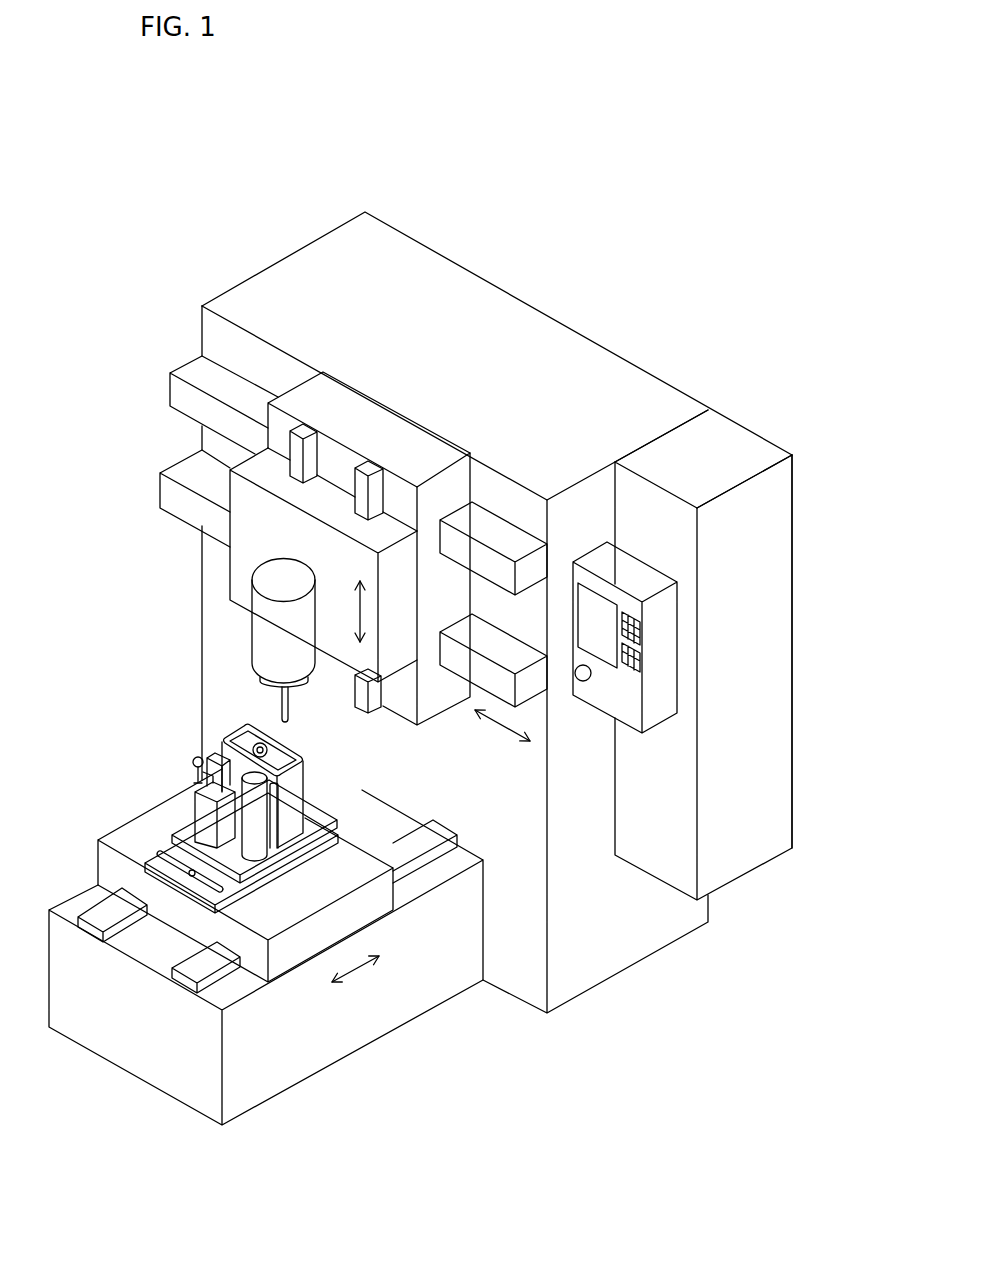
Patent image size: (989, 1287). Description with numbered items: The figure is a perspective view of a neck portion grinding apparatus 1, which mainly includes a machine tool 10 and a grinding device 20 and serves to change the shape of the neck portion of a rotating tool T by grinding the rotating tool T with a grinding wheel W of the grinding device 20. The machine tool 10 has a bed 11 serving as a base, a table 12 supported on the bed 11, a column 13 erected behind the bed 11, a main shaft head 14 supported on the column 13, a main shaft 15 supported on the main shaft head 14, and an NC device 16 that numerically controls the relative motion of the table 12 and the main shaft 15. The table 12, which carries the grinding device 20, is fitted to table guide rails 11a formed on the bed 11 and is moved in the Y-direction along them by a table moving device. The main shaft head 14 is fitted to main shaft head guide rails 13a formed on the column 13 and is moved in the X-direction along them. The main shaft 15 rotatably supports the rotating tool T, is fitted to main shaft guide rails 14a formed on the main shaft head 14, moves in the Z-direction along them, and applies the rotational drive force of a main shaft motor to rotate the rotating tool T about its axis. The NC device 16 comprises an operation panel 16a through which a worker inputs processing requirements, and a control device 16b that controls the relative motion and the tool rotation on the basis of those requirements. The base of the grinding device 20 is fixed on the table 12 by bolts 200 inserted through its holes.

The neck portion grinding apparatus 1 is at (562, 228).
The machine tool 10 is at (660, 340).
The bed 11 is at (338, 1080).
The table guide rails 11a is at (173, 983).
The table 12 is at (100, 860).
The column 13 is at (690, 907).
The main shaft head guide rails 13a is at (172, 494).
The main shaft head 14 is at (392, 425).
The main shaft guide rails 14a is at (372, 467).
The main shaft 15 is at (262, 634).
The NC device 16 is at (772, 436).
The operation panel 16a is at (662, 703).
The control device 16b is at (776, 543).
The grinding device 20 is at (140, 800).
The bolts 200 is at (192, 873).
The rotating tool T is at (282, 710).
The grinding wheel W is at (278, 742).